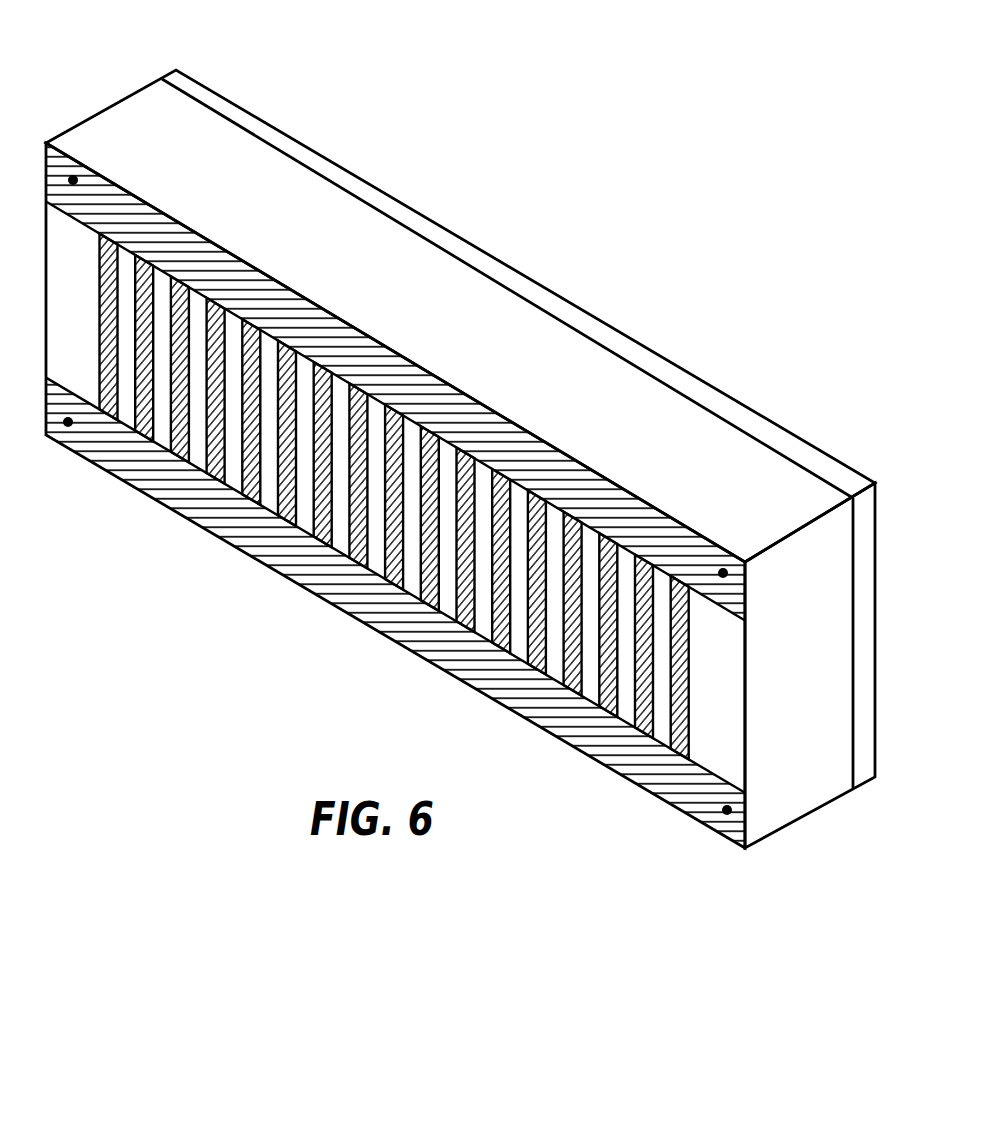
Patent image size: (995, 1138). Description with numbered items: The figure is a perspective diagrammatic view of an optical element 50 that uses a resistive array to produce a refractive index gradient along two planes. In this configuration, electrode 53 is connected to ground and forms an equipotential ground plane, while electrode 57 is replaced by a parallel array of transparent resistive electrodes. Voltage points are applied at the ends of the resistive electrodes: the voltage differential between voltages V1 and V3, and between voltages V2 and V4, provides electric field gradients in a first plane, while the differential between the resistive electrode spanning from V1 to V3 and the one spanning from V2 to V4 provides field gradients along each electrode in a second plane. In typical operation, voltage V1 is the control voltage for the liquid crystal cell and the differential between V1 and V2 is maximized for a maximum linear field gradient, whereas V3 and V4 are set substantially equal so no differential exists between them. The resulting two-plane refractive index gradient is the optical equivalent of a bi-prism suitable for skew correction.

The electro-optic device 50 is at (453, 496).
The electrode 53 is at (418, 226).
The electrode 57 is at (486, 401).
The voltage V1 is at (73, 180).
The voltage V2 is at (68, 422).
The voltage V3 is at (723, 573).
The voltage V4 is at (727, 893).